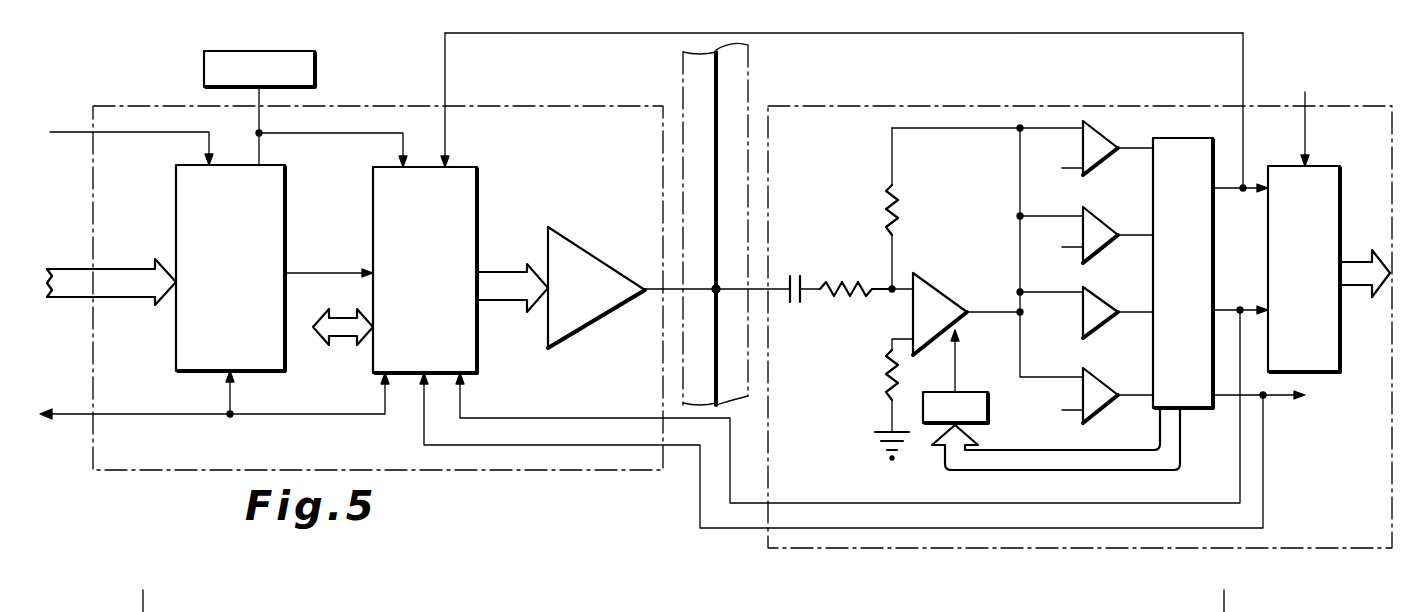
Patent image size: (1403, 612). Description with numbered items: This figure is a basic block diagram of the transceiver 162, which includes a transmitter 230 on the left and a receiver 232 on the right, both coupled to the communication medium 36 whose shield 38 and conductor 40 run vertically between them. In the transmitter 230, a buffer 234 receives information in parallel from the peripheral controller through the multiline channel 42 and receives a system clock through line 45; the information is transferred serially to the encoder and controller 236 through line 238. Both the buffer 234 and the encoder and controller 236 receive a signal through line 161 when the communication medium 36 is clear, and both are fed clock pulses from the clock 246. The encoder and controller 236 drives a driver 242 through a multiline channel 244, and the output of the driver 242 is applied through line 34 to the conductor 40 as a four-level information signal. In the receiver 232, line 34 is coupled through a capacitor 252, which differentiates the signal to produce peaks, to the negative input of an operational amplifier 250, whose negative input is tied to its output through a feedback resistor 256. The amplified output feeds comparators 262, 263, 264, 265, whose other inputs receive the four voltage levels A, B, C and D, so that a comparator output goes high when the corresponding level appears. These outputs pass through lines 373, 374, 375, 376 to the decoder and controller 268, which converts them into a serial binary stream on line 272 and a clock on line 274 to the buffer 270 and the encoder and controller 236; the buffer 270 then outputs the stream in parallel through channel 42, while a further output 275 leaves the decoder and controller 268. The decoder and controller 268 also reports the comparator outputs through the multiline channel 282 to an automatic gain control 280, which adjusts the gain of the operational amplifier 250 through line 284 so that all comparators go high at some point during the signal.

The line 34 is at (665, 291).
The communication medium 36 is at (762, 96).
The shield 38 is at (683, 82).
The conductor 40 is at (720, 70).
The multiline channel 42 is at (148, 268).
The line 45 is at (68, 132).
The line 161 is at (68, 416).
The transceiver 162 is at (1290, 76).
The transmitter 230 is at (480, 106).
The receiver 232 is at (1322, 106).
The buffer 234 is at (278, 165).
The encoder and controller 236 is at (372, 167).
The line 238 is at (310, 273).
The driver 242 is at (596, 280).
The multiline channel 244 is at (495, 272).
The clock 246 is at (318, 76).
The operational amplifier 250 is at (946, 282).
The capacitor 252 is at (803, 300).
The feedback resistor 256 is at (890, 210).
The comparator 262 is at (1104, 134).
The comparator 263 is at (1100, 220).
The comparator 264 is at (1108, 298).
The comparator 265 is at (1100, 382).
The decoder and controller 268 is at (1176, 138).
The buffer 270 is at (1345, 372).
The line 272 is at (1229, 190).
The line 274 is at (1227, 310).
The decoder output line 275 is at (1224, 398).
The automatic gain control 280 is at (962, 392).
The multiline channel 282 is at (1045, 472).
The line 284 is at (962, 356).
The line 373 is at (1130, 150).
The line 374 is at (1130, 236).
The line 375 is at (1128, 313).
The line 376 is at (1128, 396).